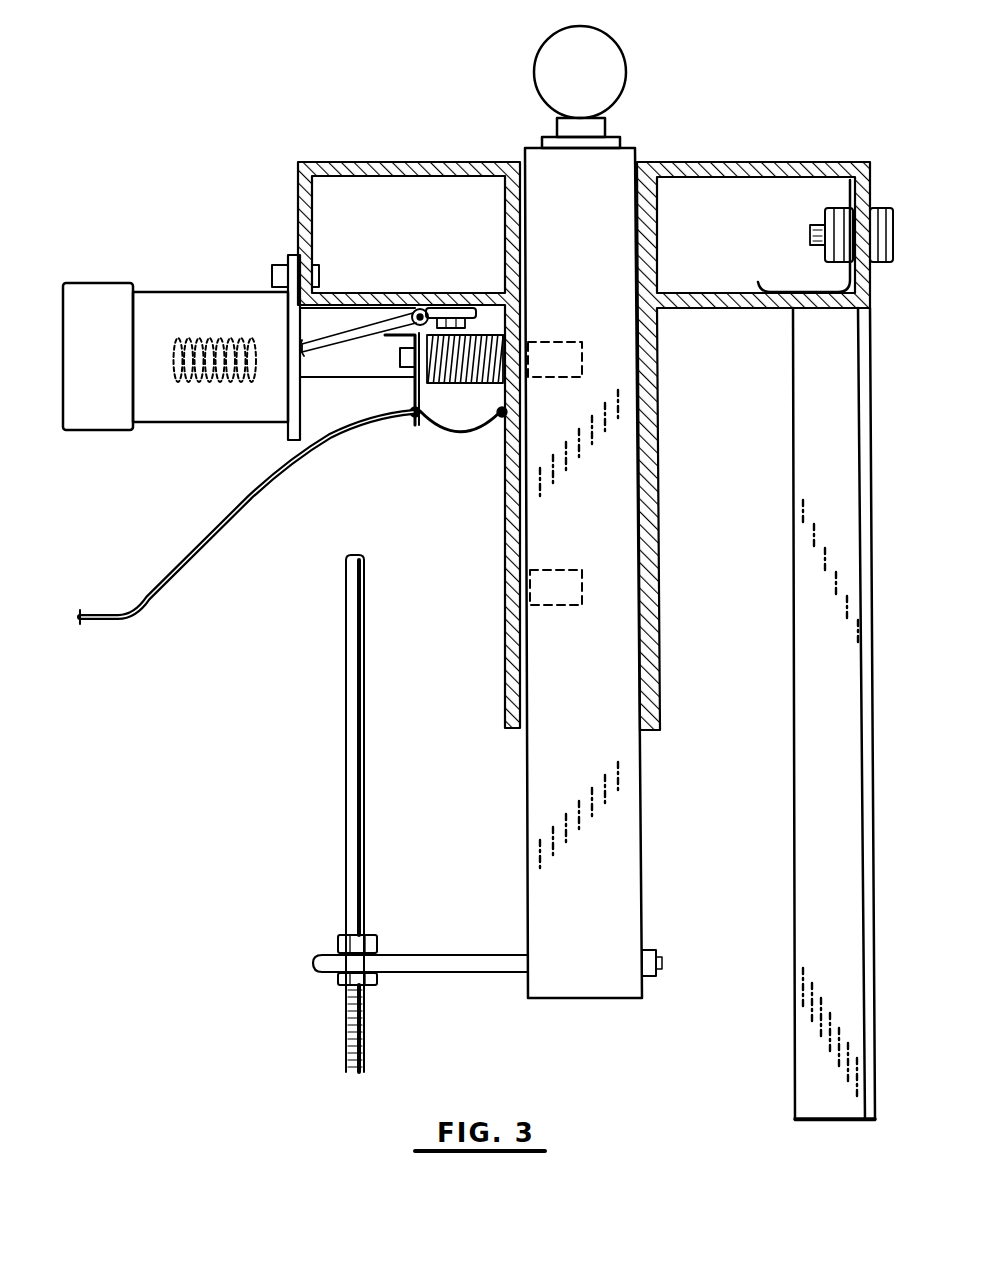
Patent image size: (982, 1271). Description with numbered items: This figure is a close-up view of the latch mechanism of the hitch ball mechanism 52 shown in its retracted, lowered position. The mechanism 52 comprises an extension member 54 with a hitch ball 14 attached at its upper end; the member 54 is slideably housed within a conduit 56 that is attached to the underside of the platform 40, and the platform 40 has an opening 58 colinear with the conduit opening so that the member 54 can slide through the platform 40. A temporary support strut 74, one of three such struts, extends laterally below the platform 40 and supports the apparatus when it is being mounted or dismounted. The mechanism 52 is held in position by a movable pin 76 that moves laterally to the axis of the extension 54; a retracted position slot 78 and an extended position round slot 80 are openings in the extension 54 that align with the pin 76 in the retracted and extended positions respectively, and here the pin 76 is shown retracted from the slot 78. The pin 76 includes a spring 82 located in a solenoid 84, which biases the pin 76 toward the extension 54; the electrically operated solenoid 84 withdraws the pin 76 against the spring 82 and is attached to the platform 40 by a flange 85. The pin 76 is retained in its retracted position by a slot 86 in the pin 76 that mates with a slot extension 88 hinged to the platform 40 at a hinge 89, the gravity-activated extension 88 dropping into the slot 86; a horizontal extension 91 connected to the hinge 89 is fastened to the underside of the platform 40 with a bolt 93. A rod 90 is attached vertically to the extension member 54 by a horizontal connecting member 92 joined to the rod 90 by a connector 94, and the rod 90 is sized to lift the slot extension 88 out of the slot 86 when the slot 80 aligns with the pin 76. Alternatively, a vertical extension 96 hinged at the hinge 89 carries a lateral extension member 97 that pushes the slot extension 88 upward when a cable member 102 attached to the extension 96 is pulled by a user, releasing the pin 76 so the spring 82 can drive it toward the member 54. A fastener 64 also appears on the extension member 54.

The hitch ball 14 is at (544, 46).
The platform 40 is at (768, 165).
The hitch ball mechanism 52 is at (495, 803).
The extension member 54 is at (628, 152).
The conduit 56 is at (662, 560).
The opening 58 is at (518, 160).
The bolt 64 is at (652, 995).
The temporary support strut 74 is at (805, 765).
The movable pin 76 is at (368, 380).
The retracted position slot 78 is at (555, 378).
The extended position round slot 80 is at (562, 606).
The spring 82 is at (200, 390).
The solenoid 84 is at (160, 292).
The flange 85 is at (290, 265).
The slot 86 is at (305, 340).
The slot extension 88 is at (334, 330).
The hinge 89 is at (434, 330).
The rod 90 is at (348, 690).
The horizontal extension 91 is at (452, 306).
The horizontal connecting member 92 is at (472, 975).
The bolt 93 is at (468, 322).
The connector 94 is at (338, 940).
The vertical extension 96 is at (420, 426).
The lateral extension member 97 is at (398, 350).
The cable member 102 is at (222, 525).